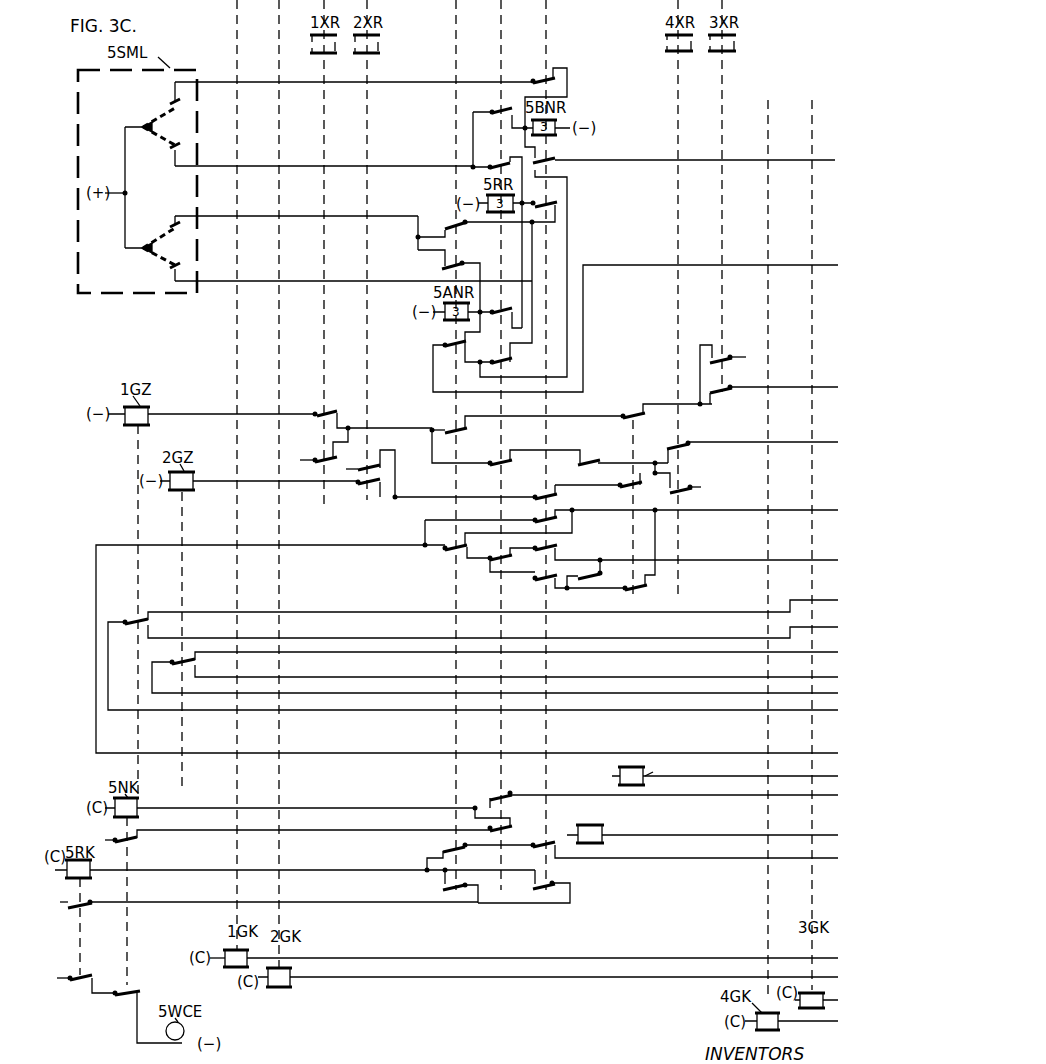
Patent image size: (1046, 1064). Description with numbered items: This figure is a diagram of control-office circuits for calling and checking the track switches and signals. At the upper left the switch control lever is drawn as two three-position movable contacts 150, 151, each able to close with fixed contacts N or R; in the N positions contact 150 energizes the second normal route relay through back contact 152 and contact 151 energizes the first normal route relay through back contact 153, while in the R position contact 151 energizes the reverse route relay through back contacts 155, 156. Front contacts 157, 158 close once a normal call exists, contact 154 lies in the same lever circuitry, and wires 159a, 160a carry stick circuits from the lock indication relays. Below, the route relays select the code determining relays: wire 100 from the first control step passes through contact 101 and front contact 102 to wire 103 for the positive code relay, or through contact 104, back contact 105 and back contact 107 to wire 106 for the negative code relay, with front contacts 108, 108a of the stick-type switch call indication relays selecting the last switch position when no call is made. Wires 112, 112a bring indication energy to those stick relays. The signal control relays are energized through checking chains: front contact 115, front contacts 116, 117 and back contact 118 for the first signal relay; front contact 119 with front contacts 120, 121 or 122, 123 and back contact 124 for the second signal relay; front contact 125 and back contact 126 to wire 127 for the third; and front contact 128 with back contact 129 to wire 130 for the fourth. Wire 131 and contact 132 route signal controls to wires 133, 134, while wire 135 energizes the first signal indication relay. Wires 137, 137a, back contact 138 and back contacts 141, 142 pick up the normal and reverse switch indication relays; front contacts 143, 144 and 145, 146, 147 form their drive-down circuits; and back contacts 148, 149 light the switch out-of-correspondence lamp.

The wire 100 is at (810, 753).
The contact of relay 5ANR 101 is at (452, 551).
The front contact of relay 5BNR 102 is at (546, 521).
The wire 103 is at (812, 511).
The contact of relay 5RR 104 is at (499, 562).
The back contact of relay 5BNR 105 is at (557, 558).
The wire 106 is at (810, 561).
The back contact of relay 5BNR 107 is at (545, 578).
The front contact of relay 5NZK 108 is at (642, 589).
The front contact of relay 5RZK 108a is at (593, 582).
The wire 112 is at (807, 776).
The wire 112a is at (813, 832).
The front contact of relay 3XR 115 is at (735, 374).
The front contact of relay 5NZK 116 is at (632, 412).
The front contact of relay 5ANR 117 is at (527, 439).
The back contact of relay 1XR 118 is at (317, 418).
The front contact of relay 4XR 119 is at (675, 489).
The front contact of relay 5RZK 120 is at (584, 462).
The front contact of relay 5RR 121 is at (495, 469).
The front contact of relay 5NZK 122 is at (598, 490).
The front contact of relay 5BNR 123 is at (546, 497).
The back contact of relay 2XR 124 is at (359, 487).
The front contact of relay 1XR 125 is at (315, 457).
The back contact of relay 3XR 126 is at (723, 392).
The wire 127 is at (832, 388).
The front contact of relay 2XR 128 is at (368, 463).
The back contact of relay 4XR 129 is at (676, 444).
The wire 130 is at (813, 445).
The wire 131 is at (803, 711).
The contact of relay 1GZ 132 is at (133, 627).
The wire 133 is at (797, 601).
The wire 134 is at (797, 628).
The wire 135 is at (806, 950).
The wire 137 is at (810, 795).
The wire 137a is at (813, 858).
The back contact of relay 5RR 138 is at (498, 795).
The back contact of relay 5BNR 141 is at (539, 845).
The back contact of relay 5ANR 142 is at (480, 857).
The front contact of relay 5NK 143 is at (134, 843).
The front contact of relay 5RR 144 is at (533, 813).
The front contact of relay 5RK 145 is at (87, 908).
The front contact of relay 5BNR 146 is at (532, 888).
The front contact of relay 5ANR 147 is at (440, 888).
The back contact of relay 5RK 148 is at (78, 984).
The back contact of relay 5NK 149 is at (123, 997).
The contact of lever 5SML 150 is at (170, 133).
The contact of lever 5SML 151 is at (170, 253).
The back contact of relay 5RR 152 is at (502, 110).
The back contact of relay 5RR 153 is at (498, 318).
The contact 154 is at (503, 164).
The back contact of relay 5ANR 155 is at (443, 224).
The back contact of relay 5BNR 156 is at (552, 207).
The front contact of relay 5ANR 157 is at (460, 263).
The front contact of relay 5BNR 158 is at (542, 80).
The wire 159a is at (803, 266).
The wire 160a is at (805, 160).